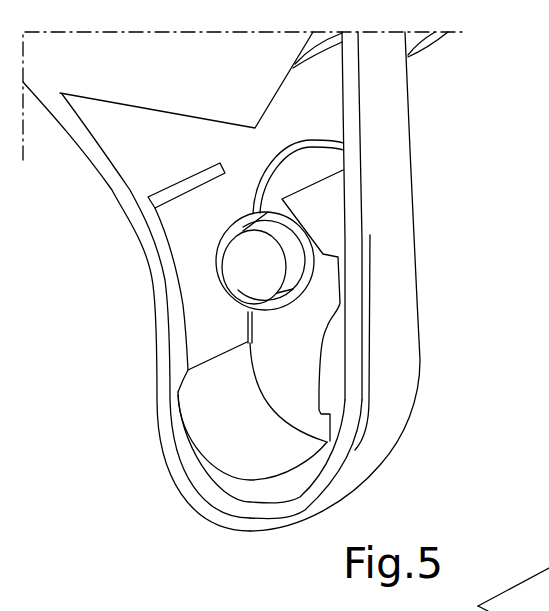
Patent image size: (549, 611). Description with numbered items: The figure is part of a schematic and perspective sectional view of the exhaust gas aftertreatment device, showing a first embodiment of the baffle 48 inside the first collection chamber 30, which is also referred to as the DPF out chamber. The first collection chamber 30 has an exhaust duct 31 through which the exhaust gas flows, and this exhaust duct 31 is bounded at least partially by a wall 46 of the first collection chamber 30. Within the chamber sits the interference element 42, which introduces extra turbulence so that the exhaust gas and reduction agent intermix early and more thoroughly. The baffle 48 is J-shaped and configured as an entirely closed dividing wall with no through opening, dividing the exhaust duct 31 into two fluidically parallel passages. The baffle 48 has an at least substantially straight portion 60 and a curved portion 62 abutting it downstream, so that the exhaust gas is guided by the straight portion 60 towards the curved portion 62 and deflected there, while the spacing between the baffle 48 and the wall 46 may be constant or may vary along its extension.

The first collection chamber 30 is at (125, 189).
The exhaust duct 31 is at (259, 74).
The interference element 42 is at (164, 195).
The wall 46 is at (410, 108).
The baffle 48 is at (208, 429).
The straight portion 60 is at (351, 340).
The curved portion 62 is at (250, 492).